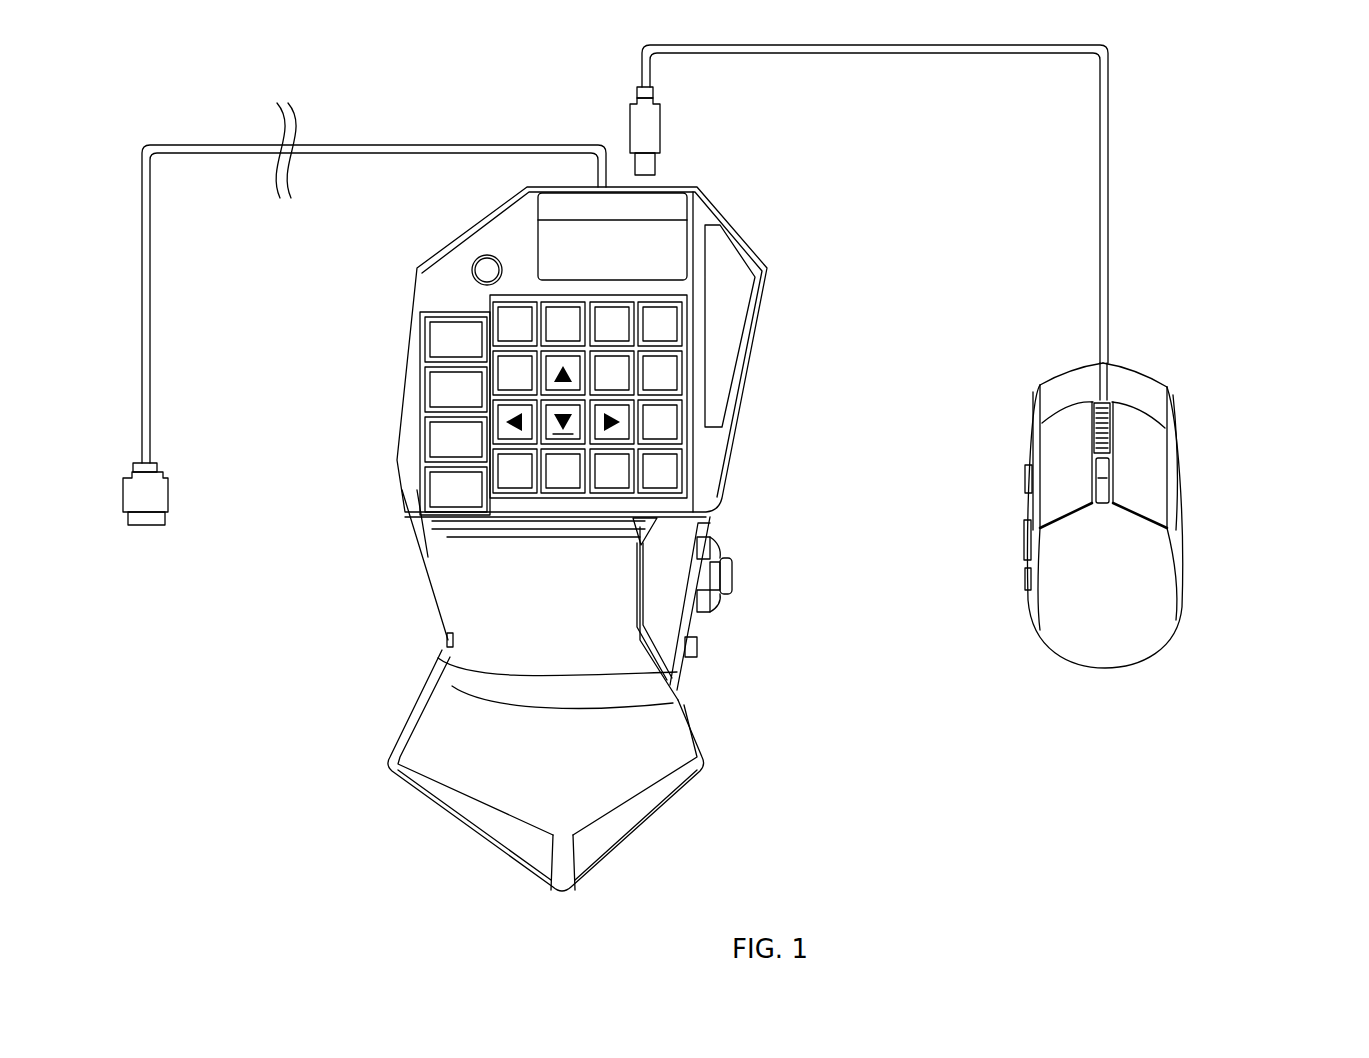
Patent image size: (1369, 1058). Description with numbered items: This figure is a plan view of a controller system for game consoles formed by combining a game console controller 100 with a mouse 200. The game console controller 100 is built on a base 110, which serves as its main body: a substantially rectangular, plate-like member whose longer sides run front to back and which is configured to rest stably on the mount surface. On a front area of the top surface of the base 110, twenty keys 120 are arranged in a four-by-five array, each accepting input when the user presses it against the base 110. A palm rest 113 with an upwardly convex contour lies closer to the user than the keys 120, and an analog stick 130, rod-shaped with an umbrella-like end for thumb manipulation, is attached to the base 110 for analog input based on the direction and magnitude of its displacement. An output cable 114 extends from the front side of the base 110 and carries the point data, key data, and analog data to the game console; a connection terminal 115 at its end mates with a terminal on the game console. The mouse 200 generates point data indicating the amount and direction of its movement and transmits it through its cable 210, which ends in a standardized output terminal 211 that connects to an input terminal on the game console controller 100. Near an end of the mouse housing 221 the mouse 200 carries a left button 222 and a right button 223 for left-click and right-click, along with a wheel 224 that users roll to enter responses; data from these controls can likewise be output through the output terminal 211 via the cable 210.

The game console controller 100 is at (242, 597).
The base 110 is at (510, 222).
The palm rest 113 is at (447, 600).
The output cable 114 is at (402, 143).
The connection terminal 115 is at (165, 497).
The keys 120 is at (502, 320).
The analog stick 130 is at (735, 576).
The mouse 200 is at (1272, 480).
The cable 210 is at (1108, 128).
The output terminal 211 is at (660, 130).
The mouse housing 221 is at (1157, 577).
The left button 222 is at (1062, 382).
The right button 223 is at (1145, 383).
The wheel 224 is at (1110, 440).